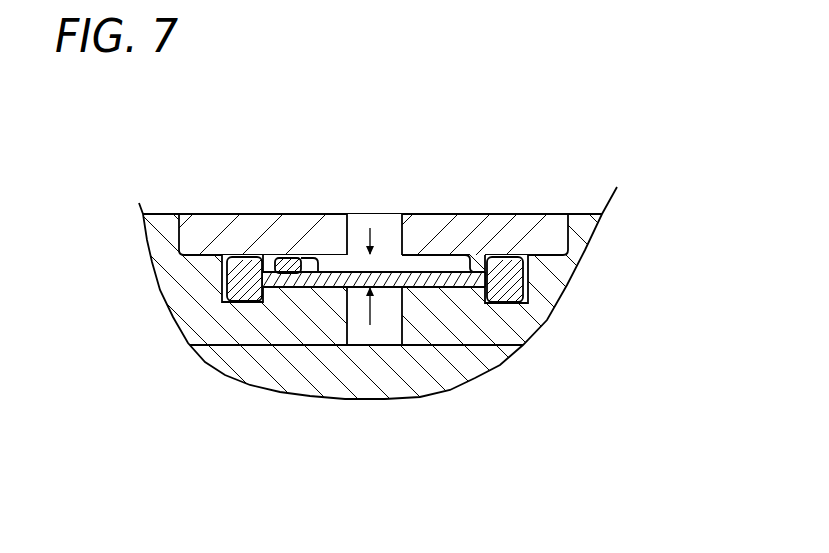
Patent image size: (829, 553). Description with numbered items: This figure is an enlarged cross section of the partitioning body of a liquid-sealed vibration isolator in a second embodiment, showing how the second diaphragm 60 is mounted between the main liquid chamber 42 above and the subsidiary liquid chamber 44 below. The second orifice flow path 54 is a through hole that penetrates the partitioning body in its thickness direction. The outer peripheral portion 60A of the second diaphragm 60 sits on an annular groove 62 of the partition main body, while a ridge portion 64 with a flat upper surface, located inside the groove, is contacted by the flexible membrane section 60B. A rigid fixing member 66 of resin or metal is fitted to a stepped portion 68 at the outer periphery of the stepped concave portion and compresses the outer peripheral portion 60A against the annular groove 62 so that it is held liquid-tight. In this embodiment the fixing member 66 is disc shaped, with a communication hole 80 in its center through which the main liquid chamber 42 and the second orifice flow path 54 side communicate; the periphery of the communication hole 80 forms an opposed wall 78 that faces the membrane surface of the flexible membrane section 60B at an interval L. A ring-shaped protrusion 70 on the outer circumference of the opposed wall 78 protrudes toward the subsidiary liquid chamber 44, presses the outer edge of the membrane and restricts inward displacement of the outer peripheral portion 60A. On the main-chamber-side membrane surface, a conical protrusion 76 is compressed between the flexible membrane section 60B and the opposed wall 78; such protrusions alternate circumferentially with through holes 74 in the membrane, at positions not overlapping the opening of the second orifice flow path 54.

The main liquid chamber 42 is at (540, 167).
The subsidiary liquid chamber 44 is at (407, 380).
The second orifice flow path 54 is at (365, 322).
The second diaphragm 60 is at (420, 268).
The outer peripheral portion 60A is at (530, 281).
The flexible membrane section 60B is at (392, 288).
The annular groove 62 is at (240, 304).
The ridge portion 64 is at (282, 298).
The fixing member 66 is at (235, 213).
The stepped portion 68 is at (195, 213).
The ring-shaped protrusion 70 is at (480, 295).
The through hole 74 is at (432, 288).
The protrusion 76 is at (296, 262).
The opposed wall 78 is at (330, 250).
The communication hole 80 is at (386, 256).
The interval L is at (370, 228).